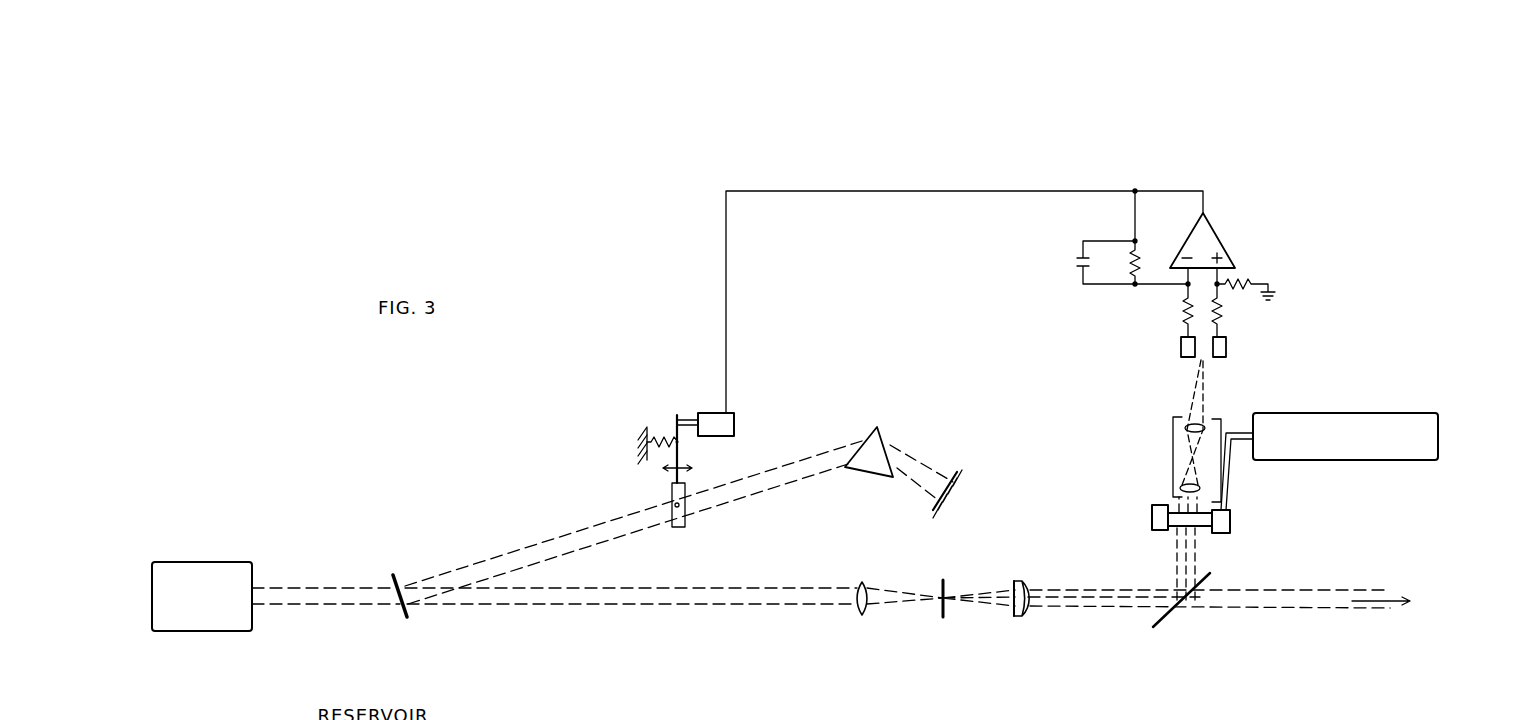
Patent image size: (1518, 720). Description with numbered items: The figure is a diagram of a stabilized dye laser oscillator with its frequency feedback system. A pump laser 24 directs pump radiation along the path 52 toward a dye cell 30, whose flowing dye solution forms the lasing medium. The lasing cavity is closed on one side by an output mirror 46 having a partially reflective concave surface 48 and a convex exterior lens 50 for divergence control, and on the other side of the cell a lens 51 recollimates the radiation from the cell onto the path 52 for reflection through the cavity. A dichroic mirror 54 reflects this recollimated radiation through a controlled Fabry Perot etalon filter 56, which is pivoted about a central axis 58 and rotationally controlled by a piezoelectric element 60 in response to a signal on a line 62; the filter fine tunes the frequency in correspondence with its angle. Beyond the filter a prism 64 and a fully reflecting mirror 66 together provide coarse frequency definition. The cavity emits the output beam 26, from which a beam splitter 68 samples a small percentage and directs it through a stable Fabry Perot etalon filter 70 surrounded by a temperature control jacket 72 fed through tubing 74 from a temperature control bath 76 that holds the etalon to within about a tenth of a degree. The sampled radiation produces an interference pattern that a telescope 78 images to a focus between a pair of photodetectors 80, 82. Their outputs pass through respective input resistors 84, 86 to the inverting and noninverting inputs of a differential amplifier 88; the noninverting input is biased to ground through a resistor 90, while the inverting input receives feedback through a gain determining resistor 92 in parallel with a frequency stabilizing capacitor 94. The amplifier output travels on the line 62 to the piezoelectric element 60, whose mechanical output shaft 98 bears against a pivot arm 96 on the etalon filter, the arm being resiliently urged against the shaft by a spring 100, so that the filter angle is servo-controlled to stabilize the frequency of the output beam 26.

The pump laser 24 is at (215, 562).
The output beam 26 is at (1370, 610).
The dye cell 30 is at (940, 610).
The output mirror 46 is at (1039, 628).
The partially reflective concave surface 48 is at (1013, 583).
The convex exterior lens 50 is at (1030, 583).
The lens 51 is at (858, 612).
The path 52 is at (572, 550).
The dichroic mirror 54 is at (393, 580).
The Fabry Perot etalon filter 56 is at (579, 495).
The central axis 58 is at (710, 505).
The piezoelectric element 60 is at (745, 413).
The line 62 is at (726, 232).
The prism 64 is at (835, 505).
The fully reflecting mirror 66 is at (952, 472).
The beam splitter 68 is at (1165, 620).
The stable Fabry Perot etalon filter 70 is at (1163, 532).
The temperature control jacket 72 is at (1218, 535).
The tubing 74 is at (1232, 475).
The temperature control bath 76 is at (1438, 450).
The telescope 78 is at (1172, 446).
The photodetector 80 is at (1181, 347).
The photodetector 82 is at (1228, 347).
The input resistor 84 is at (1183, 310).
The input resistor 86 is at (1226, 307).
The differential amplifier 88 is at (1220, 243).
The resistor 90 is at (1250, 277).
The gain determining resistor 92 is at (1138, 255).
The frequency stabilizing capacitor 94 is at (1080, 265).
The pivot arm 96 is at (680, 458).
The mechanical output shaft 98 is at (684, 418).
The spring 100 is at (660, 437).